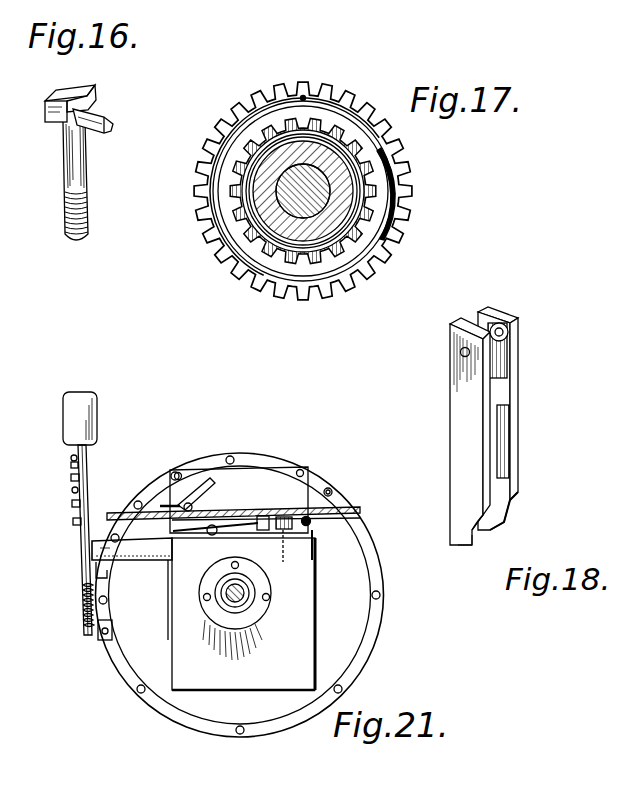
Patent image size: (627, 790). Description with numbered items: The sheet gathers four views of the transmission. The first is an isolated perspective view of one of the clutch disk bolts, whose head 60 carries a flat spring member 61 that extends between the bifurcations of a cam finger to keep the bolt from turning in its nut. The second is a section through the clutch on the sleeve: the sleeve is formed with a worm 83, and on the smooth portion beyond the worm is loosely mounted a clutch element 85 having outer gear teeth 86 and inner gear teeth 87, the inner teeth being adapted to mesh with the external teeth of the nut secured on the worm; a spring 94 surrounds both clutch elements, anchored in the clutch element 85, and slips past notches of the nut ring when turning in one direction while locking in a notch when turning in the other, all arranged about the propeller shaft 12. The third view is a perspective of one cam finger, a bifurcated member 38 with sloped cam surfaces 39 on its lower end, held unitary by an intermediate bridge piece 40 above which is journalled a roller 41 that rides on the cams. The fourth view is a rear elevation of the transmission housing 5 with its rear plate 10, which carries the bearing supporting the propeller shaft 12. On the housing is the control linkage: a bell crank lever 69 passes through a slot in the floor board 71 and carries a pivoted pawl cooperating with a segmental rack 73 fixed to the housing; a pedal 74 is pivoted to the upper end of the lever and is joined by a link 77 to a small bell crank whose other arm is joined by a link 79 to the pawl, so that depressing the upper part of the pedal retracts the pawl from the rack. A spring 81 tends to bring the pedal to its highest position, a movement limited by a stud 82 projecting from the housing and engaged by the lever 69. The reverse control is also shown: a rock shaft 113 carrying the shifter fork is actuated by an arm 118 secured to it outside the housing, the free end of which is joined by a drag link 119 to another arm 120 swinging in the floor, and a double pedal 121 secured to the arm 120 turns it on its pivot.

In FIG. 21, the transmission housing 5 is at (148, 668).
In FIG. 21, the plate 10 is at (290, 598).
In FIG. 17, the propeller shaft 12 is at (320, 192).
In FIG. 21, the propeller shaft 12 is at (247, 604).
In FIG. 18, the bifurcated member 38 is at (519, 455).
In FIG. 18, the cam surfaces 39 is at (514, 500).
In FIG. 18, the bridge piece 40 is at (500, 390).
In FIG. 18, the roller 41 is at (509, 335).
In FIG. 16, the head 60 is at (45, 108).
In FIG. 16, the flat spring member 61 is at (96, 117).
In FIG. 21, the bell crank lever 69 is at (88, 482).
In FIG. 21, the floor board 71 is at (324, 490).
In FIG. 21, the segmental rack 73 is at (132, 549).
In FIG. 21, the pedal 74 is at (70, 428).
In FIG. 21, the link 77 is at (72, 456).
In FIG. 21, the link 79 is at (72, 494).
In FIG. 21, the spring 81 is at (83, 611).
In FIG. 21, the stud 82 is at (88, 580).
In FIG. 17, the worm 83 is at (330, 220).
In FIG. 17, the clutch element 85 is at (366, 122).
In FIG. 17, the outer gear teeth 86 is at (236, 255).
In FIG. 17, the inner gear teeth 87 is at (226, 213).
In FIG. 17, the spring 94 is at (222, 168).
In FIG. 21, the rock shaft 113 is at (308, 528).
In FIG. 21, the arm 118 is at (292, 518).
In FIG. 21, the drag link 119 is at (253, 514).
In FIG. 21, the arm 120 is at (216, 511).
In FIG. 21, the double pedal 121 is at (175, 503).